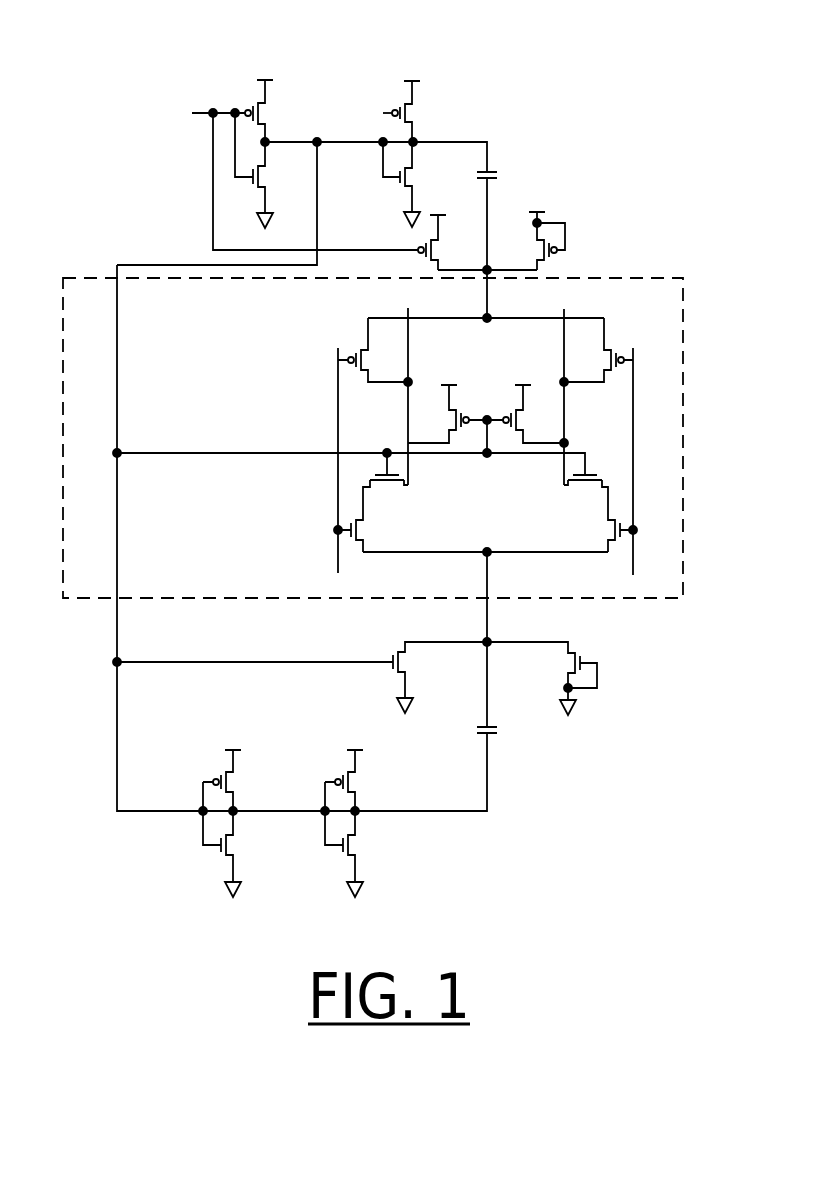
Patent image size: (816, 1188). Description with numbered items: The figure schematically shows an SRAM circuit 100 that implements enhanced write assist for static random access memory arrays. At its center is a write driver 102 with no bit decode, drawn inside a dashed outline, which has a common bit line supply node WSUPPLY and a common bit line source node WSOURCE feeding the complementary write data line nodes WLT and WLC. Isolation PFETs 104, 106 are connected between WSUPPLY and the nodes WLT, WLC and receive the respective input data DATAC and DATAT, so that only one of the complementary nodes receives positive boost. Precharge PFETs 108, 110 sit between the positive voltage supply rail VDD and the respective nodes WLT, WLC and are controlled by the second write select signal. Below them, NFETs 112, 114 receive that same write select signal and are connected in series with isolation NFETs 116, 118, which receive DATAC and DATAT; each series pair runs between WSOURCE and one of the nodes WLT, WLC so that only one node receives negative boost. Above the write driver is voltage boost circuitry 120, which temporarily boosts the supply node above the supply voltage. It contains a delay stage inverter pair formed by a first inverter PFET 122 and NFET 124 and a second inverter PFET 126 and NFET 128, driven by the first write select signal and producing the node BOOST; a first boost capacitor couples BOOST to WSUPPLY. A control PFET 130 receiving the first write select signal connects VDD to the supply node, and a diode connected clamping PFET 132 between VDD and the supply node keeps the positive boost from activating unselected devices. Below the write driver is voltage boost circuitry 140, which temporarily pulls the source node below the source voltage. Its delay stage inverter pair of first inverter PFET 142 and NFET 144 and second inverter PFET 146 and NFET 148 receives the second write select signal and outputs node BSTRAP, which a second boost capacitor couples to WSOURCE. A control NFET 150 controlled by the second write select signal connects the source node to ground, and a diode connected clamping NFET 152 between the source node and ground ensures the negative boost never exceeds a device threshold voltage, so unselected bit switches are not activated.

The SRAM circuit 100 is at (368, 26).
The write driver 102 is at (202, 318).
The PFET 104 is at (373, 350).
The PFET 106 is at (598, 350).
The PFET 108 is at (447, 401).
The PFET 110 is at (525, 401).
The NFET 112 is at (385, 494).
The NFET 114 is at (586, 494).
The NFET 116 is at (369, 533).
The NFET 118 is at (605, 533).
The voltage boost circuitry 120 is at (546, 82).
The PFET 122 is at (275, 94).
The NFET 124 is at (279, 194).
The PFET 126 is at (419, 93).
The NFET 128 is at (426, 177).
The control PFET 130 is at (451, 230).
The clamping PFET 132 is at (532, 230).
The voltage boost circuitry 140 is at (625, 645).
The PFET 142 is at (237, 785).
The NFET 144 is at (246, 863).
The PFET 146 is at (358, 785).
The NFET 148 is at (366, 863).
The control NFET 150 is at (302, 677).
The clamping NFET 152 is at (542, 678).